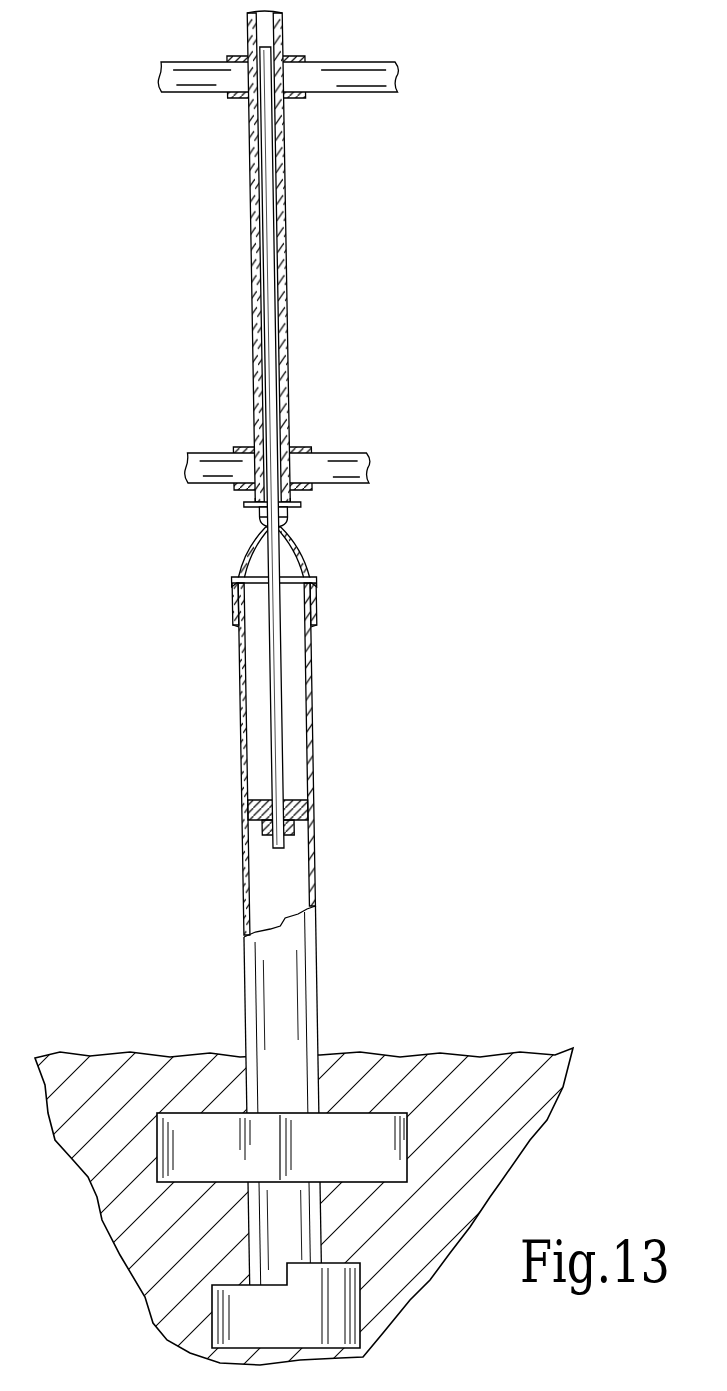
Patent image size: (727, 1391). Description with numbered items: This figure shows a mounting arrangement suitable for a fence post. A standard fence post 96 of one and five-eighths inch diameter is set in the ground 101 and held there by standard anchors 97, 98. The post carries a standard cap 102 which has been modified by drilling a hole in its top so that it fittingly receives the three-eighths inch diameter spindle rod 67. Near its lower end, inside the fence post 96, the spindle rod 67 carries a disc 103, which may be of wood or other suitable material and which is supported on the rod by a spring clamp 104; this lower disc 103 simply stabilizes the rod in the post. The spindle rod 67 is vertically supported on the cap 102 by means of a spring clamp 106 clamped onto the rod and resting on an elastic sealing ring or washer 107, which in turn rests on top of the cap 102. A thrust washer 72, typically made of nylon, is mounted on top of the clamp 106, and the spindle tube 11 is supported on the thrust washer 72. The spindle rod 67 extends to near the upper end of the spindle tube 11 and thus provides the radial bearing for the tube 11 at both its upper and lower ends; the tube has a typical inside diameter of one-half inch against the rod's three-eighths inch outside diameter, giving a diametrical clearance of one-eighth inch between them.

The spindle tube 11 is at (286, 276).
The spindle rod 67 is at (267, 182).
The thrust washer 72 is at (243, 506).
The spring clamp 106 is at (298, 506).
The elastic sealing ring or washer 107 is at (287, 516).
The cap 102 is at (303, 562).
The fence post 96 is at (312, 778).
The disc 103 is at (300, 812).
The spring clamp 104 is at (290, 838).
The anchor 97 is at (405, 1137).
The anchor 98 is at (351, 1290).
The ground 101 is at (476, 1193).